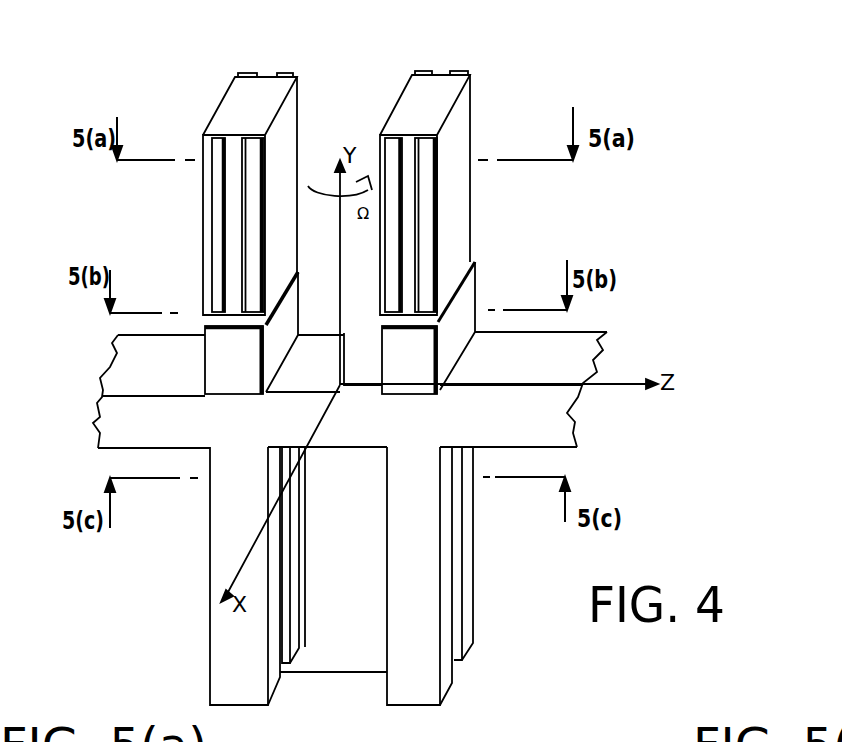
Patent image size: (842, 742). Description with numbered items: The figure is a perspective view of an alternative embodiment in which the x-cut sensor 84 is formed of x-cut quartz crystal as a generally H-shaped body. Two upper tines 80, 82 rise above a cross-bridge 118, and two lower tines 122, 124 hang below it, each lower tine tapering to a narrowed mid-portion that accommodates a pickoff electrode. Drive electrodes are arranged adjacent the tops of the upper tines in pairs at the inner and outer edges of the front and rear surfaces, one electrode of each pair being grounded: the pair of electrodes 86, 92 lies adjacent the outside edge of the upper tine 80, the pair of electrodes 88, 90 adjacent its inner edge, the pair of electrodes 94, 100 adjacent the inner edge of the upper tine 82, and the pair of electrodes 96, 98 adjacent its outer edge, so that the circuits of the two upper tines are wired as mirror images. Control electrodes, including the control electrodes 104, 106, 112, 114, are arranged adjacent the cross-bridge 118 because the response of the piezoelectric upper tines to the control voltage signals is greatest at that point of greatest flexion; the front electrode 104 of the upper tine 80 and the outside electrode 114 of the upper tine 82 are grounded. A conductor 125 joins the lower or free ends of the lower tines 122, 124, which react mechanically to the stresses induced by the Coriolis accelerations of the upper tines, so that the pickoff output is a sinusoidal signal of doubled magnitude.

The upper tine 80 is at (255, 166).
The upper tine 82 is at (457, 171).
The x-cut sensor 84 is at (582, 91).
The drive electrode 86 is at (207, 222).
The drive electrode 88 is at (252, 240).
The drive electrode 90 is at (293, 73).
The drive electrode 92 is at (247, 74).
The drive electrode 94 is at (388, 283).
The drive electrode 96 is at (427, 233).
The drive electrode 98 is at (466, 72).
The drive electrode 100 is at (423, 71).
The control electrode 104 is at (217, 355).
The control electrode 106 is at (295, 312).
The control electrode 112 is at (442, 358).
The control electrode 114 is at (477, 279).
The cross-bridge 118 is at (586, 335).
The lower tine 122 is at (206, 653).
The lower tine 124 is at (383, 689).
The conductor 125 is at (317, 672).